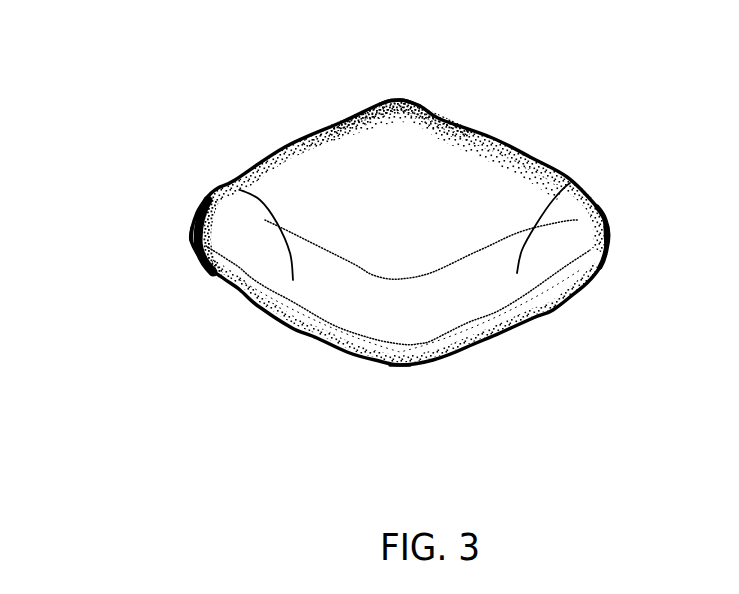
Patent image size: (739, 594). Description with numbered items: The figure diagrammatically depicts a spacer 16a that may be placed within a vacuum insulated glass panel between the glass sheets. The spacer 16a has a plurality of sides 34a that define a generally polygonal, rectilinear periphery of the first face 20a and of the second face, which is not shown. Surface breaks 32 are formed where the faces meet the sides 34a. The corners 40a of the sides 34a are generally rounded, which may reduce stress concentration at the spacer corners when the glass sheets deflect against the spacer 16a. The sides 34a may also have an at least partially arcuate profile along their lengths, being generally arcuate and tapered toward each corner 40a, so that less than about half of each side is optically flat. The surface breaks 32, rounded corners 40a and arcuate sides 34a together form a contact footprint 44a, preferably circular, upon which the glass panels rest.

The rectilinear spacer 16a is at (120, 124).
The first face 20a is at (373, 160).
The surface breaks 32 is at (285, 146).
The sides 34a is at (282, 146).
The corners 40a is at (404, 88).
The contact footprint 44a is at (410, 278).